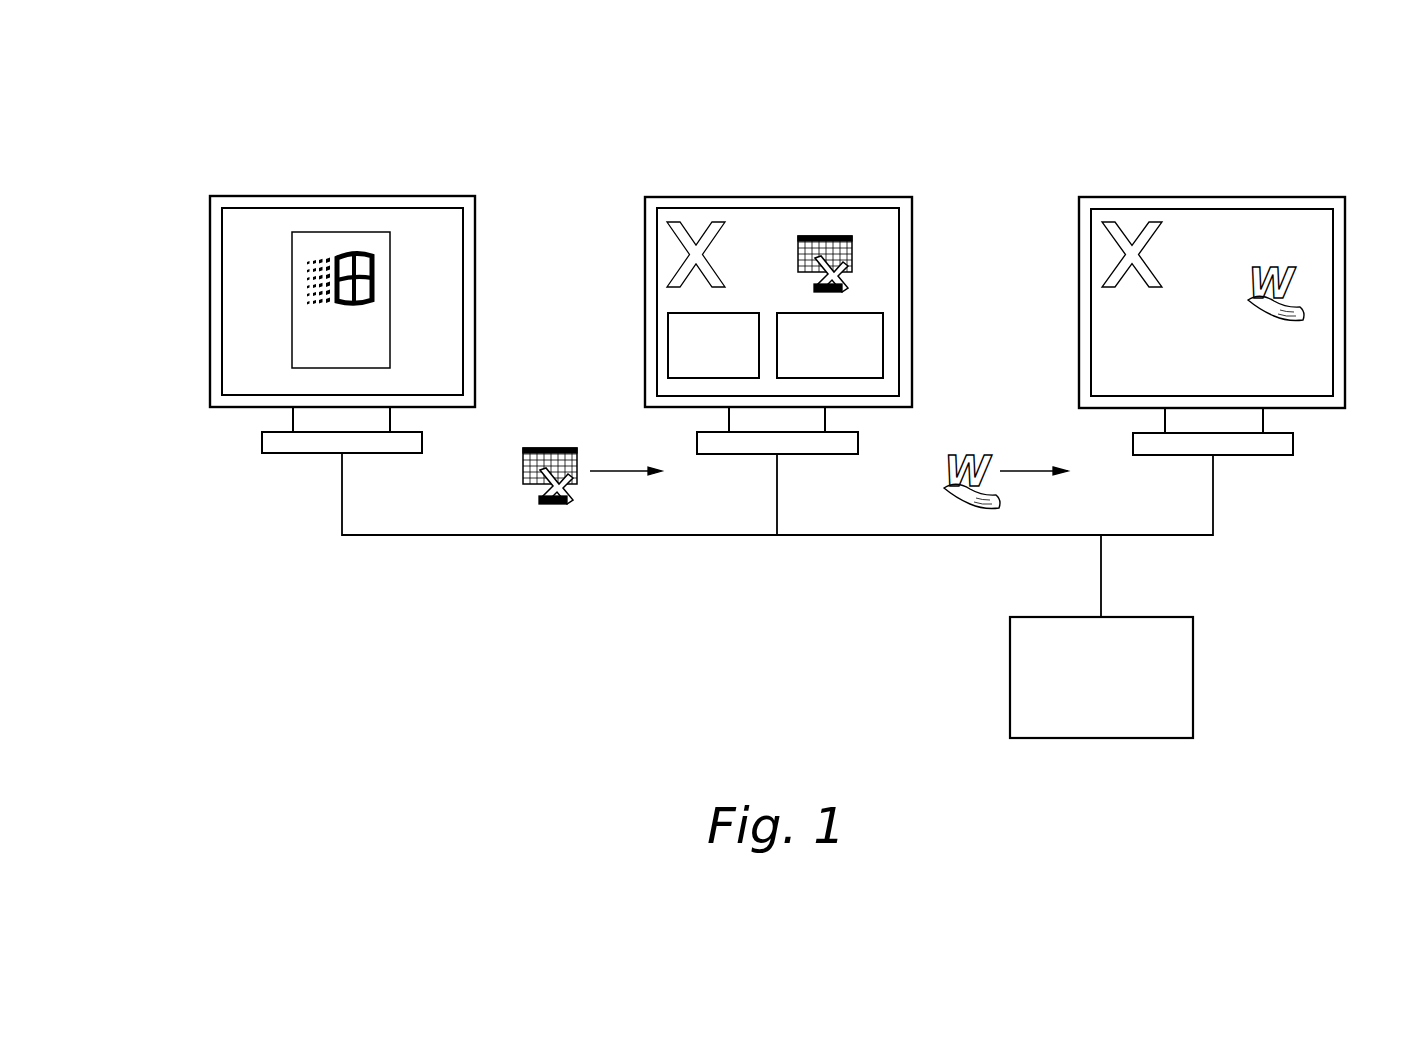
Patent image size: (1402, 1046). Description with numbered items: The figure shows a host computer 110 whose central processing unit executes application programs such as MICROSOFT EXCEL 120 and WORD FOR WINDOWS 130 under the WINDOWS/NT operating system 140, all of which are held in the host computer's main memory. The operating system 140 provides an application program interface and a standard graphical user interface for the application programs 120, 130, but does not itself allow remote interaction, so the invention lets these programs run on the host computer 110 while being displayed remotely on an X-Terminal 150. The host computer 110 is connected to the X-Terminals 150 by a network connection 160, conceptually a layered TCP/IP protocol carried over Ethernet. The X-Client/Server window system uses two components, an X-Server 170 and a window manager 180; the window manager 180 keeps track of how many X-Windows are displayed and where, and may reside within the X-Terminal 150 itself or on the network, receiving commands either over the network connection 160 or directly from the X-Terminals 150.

The host computer 110 is at (210, 283).
The MICROSOFT EXCEL application program 120 is at (523, 483).
The WORD FOR WINDOWS application program 130 is at (948, 488).
The WINDOWS/NT operating system 140 is at (342, 232).
The X-Terminal 150 is at (715, 197).
The network connection 160 is at (463, 537).
The X-Server 170 is at (668, 335).
The window manager 180 is at (883, 332).